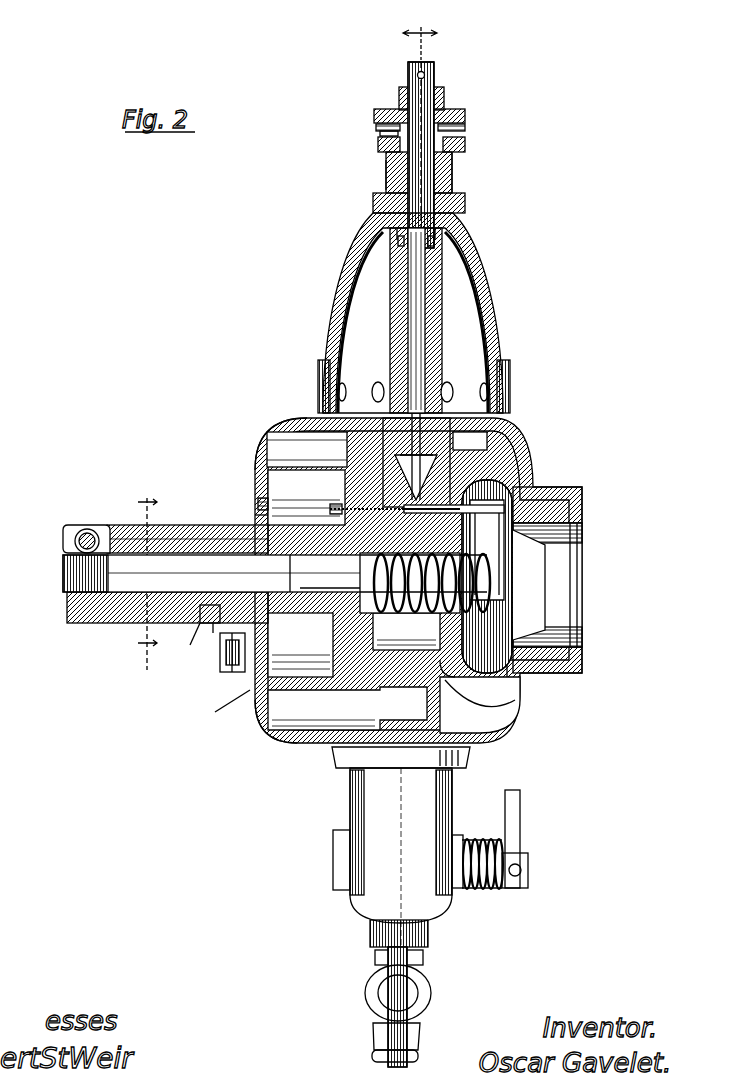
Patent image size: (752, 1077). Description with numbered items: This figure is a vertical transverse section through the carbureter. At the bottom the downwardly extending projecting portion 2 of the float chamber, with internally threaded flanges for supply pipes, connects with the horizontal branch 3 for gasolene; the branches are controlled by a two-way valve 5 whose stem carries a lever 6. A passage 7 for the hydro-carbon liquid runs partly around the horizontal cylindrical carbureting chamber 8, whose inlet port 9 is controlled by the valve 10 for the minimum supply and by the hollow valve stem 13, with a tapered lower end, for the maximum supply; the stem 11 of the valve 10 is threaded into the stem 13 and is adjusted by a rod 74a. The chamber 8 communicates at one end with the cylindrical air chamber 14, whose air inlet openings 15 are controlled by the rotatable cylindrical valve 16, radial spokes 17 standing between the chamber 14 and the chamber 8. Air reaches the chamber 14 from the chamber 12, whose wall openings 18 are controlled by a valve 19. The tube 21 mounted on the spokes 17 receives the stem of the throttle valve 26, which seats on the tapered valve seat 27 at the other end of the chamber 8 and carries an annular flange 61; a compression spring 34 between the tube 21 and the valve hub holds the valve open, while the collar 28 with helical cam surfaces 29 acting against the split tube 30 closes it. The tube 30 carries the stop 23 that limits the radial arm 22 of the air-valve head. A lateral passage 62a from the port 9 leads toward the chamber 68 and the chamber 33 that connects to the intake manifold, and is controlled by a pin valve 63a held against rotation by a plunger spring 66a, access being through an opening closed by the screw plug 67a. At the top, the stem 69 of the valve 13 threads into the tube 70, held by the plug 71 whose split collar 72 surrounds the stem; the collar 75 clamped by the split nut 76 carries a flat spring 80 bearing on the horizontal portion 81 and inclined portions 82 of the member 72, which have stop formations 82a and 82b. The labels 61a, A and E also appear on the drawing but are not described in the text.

The downwardly extending projecting portion 2 is at (352, 805).
The horizontal branch 3 is at (420, 35).
The two-way valve 5 is at (293, 460).
The lever 6 is at (516, 836).
The passage or duct 7 is at (336, 752).
The carbureting chamber 8 is at (440, 628).
The inlet port 9 is at (487, 576).
The valve 10 is at (442, 282).
The valve stem 11 is at (436, 81).
The chamber 12 is at (467, 300).
The hollow valve stem 13 is at (433, 330).
The air chamber 14 is at (262, 517).
The air inlet openings 15 is at (262, 482).
The rotatable cylindrical valve 16 is at (268, 700).
The radial spokes 17 is at (330, 631).
The openings 18 is at (344, 390).
The valve 19 is at (322, 375).
The tube 21 is at (207, 623).
The radial arm 22 is at (218, 623).
The stop 23 is at (232, 667).
The throttle valve 26 is at (535, 480).
The valve seat 27 is at (500, 680).
The collar 28 is at (67, 603).
The helical cam surfaces 29 is at (130, 620).
The split tube 30 is at (175, 640).
The chamber 33 is at (582, 521).
The compression spring 34 is at (520, 572).
The annular flange 61 is at (500, 722).
The rod section 61a is at (309, 573).
The lateral passage 62a is at (522, 460).
The pin valve 63a is at (352, 573).
The compression spring 66a is at (330, 587).
The screw plug 67a is at (262, 503).
The chamber 68 is at (548, 577).
The hollow threaded stem 69 is at (441, 175).
The tube 70 is at (442, 267).
The plug 71 is at (438, 200).
The split collar 72 is at (452, 166).
The rod 74a is at (435, 64).
The collar 75 is at (465, 118).
The split nut 76 is at (444, 101).
The flat spring 80 is at (376, 125).
The horizontal portion 81 is at (388, 158).
The inclined portions 82 is at (378, 146).
The stop formation 82a is at (380, 135).
The stop formation 82b is at (455, 133).
The point A is at (227, 708).
The flange E is at (506, 400).